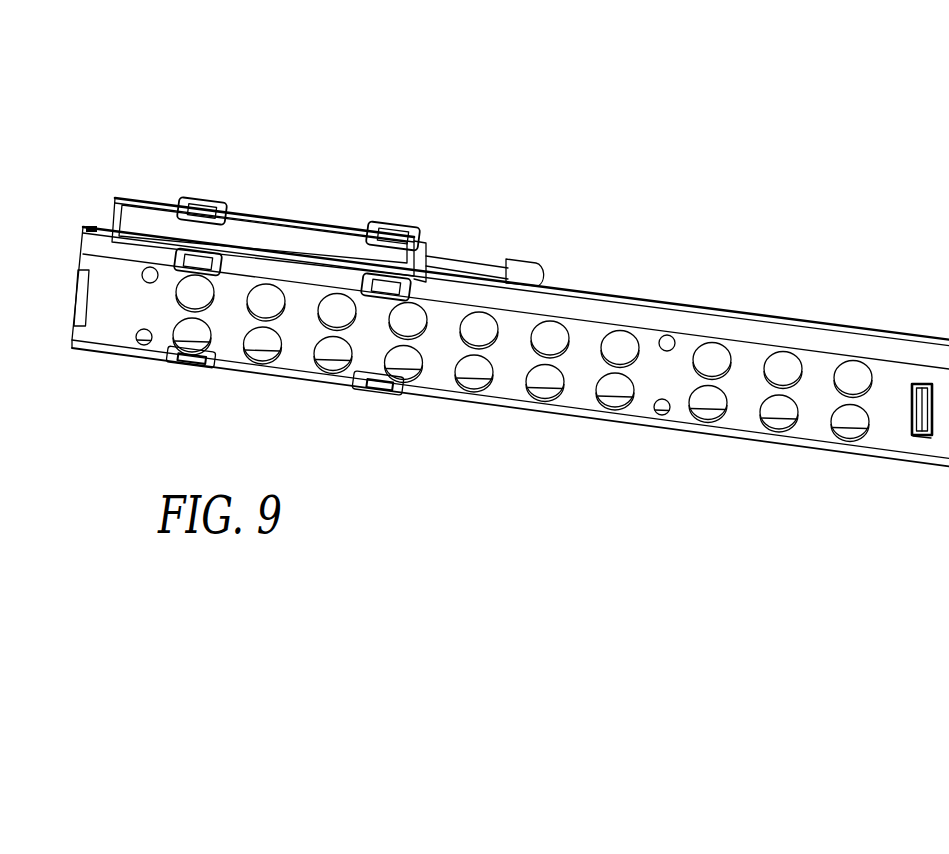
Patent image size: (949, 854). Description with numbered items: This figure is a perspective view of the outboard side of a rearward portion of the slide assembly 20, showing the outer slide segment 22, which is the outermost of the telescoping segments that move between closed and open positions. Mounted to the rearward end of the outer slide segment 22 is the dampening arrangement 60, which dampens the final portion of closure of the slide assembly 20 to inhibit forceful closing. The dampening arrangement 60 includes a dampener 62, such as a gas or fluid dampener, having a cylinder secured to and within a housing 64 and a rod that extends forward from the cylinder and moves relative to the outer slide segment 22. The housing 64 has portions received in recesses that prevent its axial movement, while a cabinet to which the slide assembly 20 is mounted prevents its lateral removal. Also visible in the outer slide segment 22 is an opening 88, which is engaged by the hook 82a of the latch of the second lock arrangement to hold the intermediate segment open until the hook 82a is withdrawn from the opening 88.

The slide assembly 20 is at (510, 310).
The outer slide segment 22 is at (637, 422).
The dampening arrangement 60 is at (328, 171).
The dampener 62 is at (462, 262).
The housing 64 is at (268, 218).
The opening 88 is at (913, 405).
The hook 82a is at (932, 418).